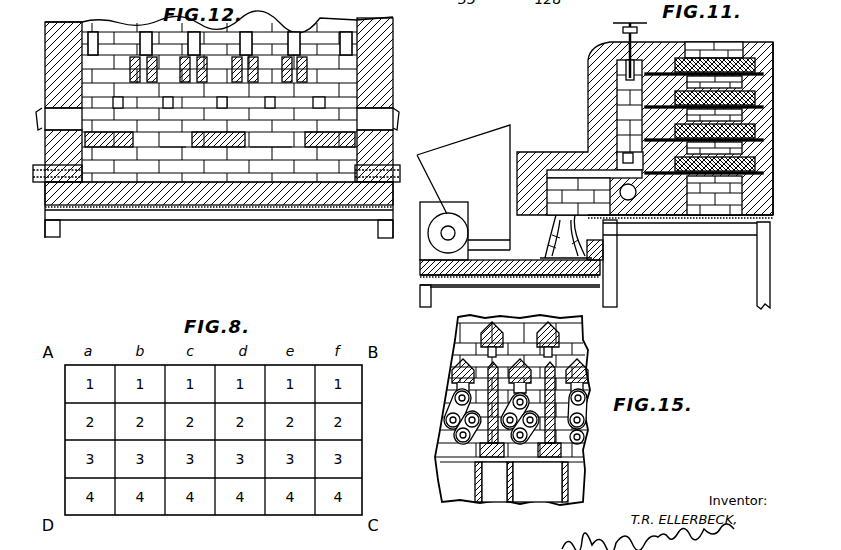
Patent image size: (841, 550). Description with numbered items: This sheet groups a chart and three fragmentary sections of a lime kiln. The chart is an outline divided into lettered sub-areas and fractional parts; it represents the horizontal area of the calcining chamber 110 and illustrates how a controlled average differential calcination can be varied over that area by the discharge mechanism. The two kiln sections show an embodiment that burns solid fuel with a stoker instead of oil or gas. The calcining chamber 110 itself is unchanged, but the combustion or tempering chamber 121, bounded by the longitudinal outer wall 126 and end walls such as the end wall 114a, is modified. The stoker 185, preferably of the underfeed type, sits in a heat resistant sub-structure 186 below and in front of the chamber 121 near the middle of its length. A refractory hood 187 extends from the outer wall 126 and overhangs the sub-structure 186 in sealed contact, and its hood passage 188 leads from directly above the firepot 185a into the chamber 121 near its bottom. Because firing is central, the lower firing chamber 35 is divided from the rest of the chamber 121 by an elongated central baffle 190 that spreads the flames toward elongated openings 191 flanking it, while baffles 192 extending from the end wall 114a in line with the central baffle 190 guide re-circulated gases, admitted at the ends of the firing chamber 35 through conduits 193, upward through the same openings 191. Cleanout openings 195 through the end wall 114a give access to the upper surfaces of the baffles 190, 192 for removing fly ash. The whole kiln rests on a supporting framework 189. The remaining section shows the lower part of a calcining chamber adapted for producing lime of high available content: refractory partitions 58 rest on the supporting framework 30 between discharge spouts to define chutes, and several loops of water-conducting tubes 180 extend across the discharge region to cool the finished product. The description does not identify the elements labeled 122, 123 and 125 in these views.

In FIG. 12, the supporting framework 30 is at (266, 212).
In FIG. 12, the firing chamber 35 is at (230, 168).
In FIG. 15, the refractory partitions 58 is at (557, 372).
In FIG. 11, the calcining chamber 110 is at (713, 53).
In FIG. 12, the end wall 114a is at (396, 66).
In FIG. 12, the combustion or tempering chamber 121 is at (267, 38).
In FIG. 11, the combustion or tempering chamber 121 is at (623, 97).
In FIG. 12, the port 122 is at (341, 117).
In FIG. 12, the opening 123 is at (340, 49).
In FIG. 15, the arch block 125 is at (563, 343).
In FIG. 11, the longitudinal refractory wall 126 is at (602, 108).
In FIG. 15, the water-conducting tubes 180 is at (450, 411).
In FIG. 11, the stoker 185 is at (463, 192).
In FIG. 11, the firepot 185a is at (592, 246).
In FIG. 11, the heat resistant sub-structure 186 is at (593, 263).
In FIG. 11, the refractory hood 187 is at (537, 154).
In FIG. 11, the hood passage 188 is at (573, 155).
In FIG. 11, the supporting framework 189 is at (620, 293).
In FIG. 12, the central baffle 190 is at (218, 150).
In FIG. 12, the elongated openings 191 is at (165, 150).
In FIG. 12, the baffles 192 is at (121, 147).
In FIG. 12, the conduits 193 is at (40, 178).
In FIG. 12, the cleanout openings 195 is at (434, 117).